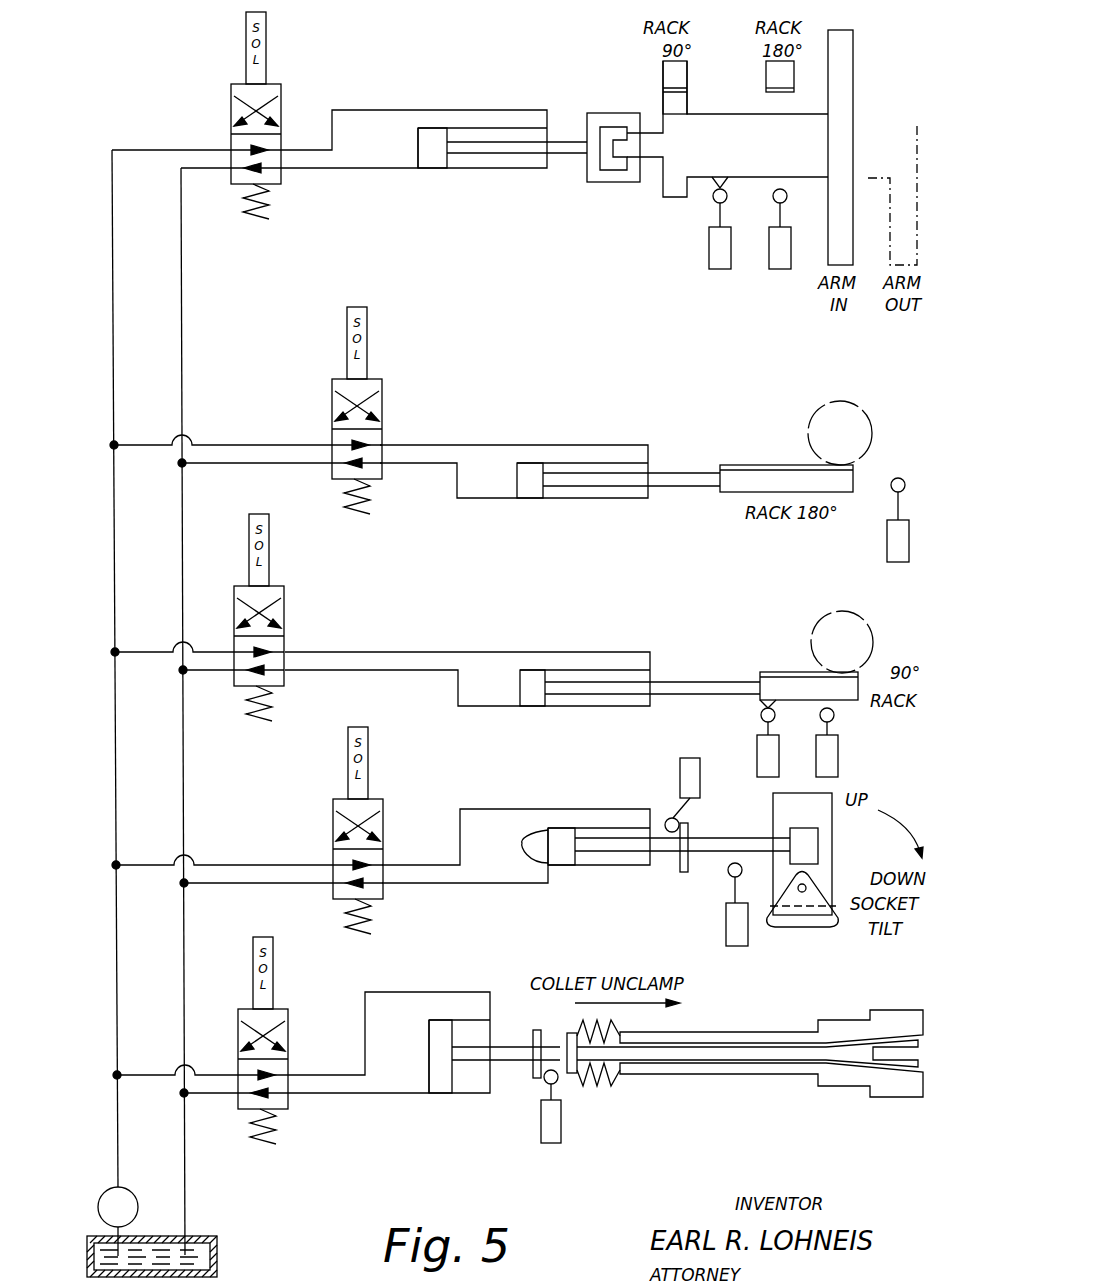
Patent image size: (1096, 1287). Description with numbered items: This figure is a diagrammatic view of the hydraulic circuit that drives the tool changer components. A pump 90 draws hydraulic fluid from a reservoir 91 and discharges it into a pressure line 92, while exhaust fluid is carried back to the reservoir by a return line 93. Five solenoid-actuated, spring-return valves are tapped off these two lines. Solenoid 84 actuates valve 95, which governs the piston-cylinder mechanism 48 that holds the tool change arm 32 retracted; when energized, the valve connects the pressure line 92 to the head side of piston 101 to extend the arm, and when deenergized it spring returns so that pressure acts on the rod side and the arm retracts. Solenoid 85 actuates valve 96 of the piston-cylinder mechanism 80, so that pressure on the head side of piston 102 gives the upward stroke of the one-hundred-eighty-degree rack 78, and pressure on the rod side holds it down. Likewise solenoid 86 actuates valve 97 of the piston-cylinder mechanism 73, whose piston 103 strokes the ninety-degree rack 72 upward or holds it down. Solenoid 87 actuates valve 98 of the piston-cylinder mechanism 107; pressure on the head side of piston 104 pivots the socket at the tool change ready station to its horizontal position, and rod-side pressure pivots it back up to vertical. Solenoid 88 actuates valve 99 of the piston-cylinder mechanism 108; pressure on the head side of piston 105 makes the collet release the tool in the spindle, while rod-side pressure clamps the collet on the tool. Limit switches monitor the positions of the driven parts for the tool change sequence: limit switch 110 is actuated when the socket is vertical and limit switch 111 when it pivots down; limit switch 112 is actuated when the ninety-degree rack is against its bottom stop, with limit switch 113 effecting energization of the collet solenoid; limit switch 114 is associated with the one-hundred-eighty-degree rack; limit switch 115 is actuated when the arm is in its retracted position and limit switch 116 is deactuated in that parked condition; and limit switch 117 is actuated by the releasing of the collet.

The tool change arm 32 is at (845, 65).
The piston-cylinder mechanism 48 is at (492, 168).
The 90° rack 72 is at (662, 78).
The piston-cylinder mechanism 73 is at (605, 707).
The 180° rack 78 is at (770, 74).
The piston-cylinder mechanism 80 is at (604, 499).
The solenoid 84 is at (268, 66).
The solenoid 85 is at (366, 355).
The solenoid 86 is at (270, 571).
The solenoid 87 is at (368, 785).
The solenoid 88 is at (270, 991).
The pump 90 is at (126, 1198).
The reservoir 91 is at (210, 1258).
The pressure line 92 is at (118, 963).
The return line 93 is at (186, 926).
The valve 95 is at (274, 128).
The valve 96 is at (372, 424).
The valve 97 is at (277, 629).
The valve 98 is at (378, 845).
The valve 99 is at (278, 1053).
The piston 101 is at (426, 152).
The piston 102 is at (530, 497).
The piston 103 is at (535, 707).
The piston 104 is at (556, 866).
The piston 105 is at (438, 1090).
The piston-cylinder mechanism 107 is at (630, 875).
The piston-cylinder mechanism 108 is at (472, 1103).
The limit switch 110 is at (688, 771).
The limit switch 111 is at (736, 940).
The limit switch 112 is at (762, 750).
The limit switch 113 is at (831, 760).
The limit switch 114 is at (900, 563).
The limit switch 115 is at (722, 270).
The limit switch 116 is at (783, 270).
The limit switch 117 is at (556, 1136).